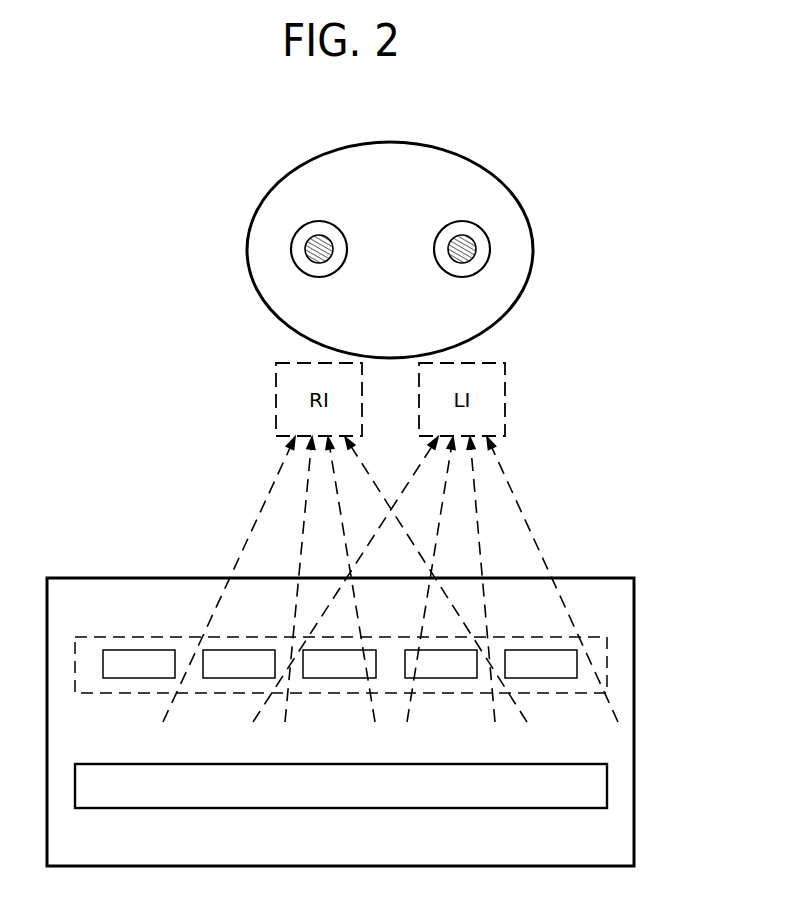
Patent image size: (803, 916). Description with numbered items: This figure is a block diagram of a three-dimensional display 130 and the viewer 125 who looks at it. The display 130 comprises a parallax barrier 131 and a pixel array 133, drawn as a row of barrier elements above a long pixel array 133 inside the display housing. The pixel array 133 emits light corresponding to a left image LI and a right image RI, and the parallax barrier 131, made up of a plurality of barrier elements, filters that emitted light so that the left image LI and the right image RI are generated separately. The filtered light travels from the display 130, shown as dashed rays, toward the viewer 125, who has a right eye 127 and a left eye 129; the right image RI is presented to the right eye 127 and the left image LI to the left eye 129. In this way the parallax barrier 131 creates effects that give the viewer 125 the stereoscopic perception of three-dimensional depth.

The viewer 125 is at (533, 248).
The right eye 127 is at (318, 278).
The left eye 129 is at (462, 278).
The 3D display 130 is at (585, 577).
The parallax barrier 131 is at (147, 636).
The pixel array 133 is at (482, 808).